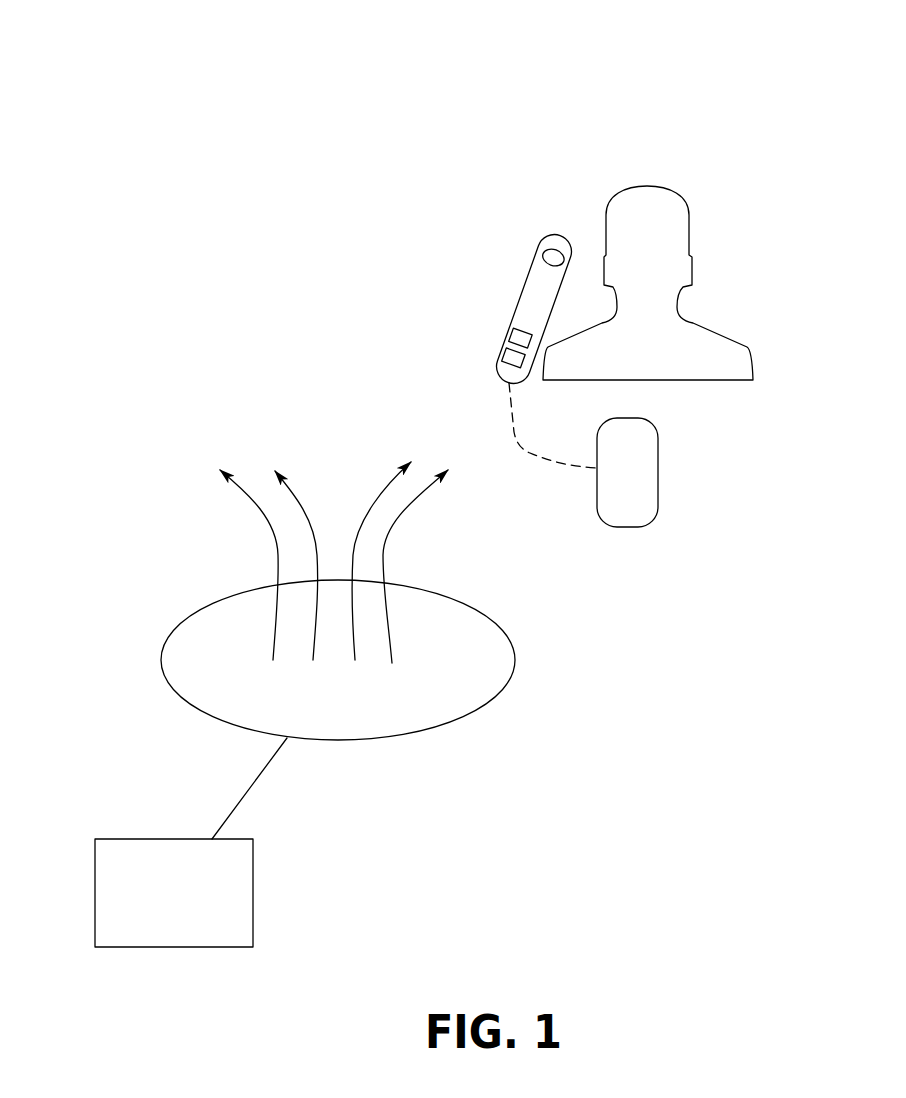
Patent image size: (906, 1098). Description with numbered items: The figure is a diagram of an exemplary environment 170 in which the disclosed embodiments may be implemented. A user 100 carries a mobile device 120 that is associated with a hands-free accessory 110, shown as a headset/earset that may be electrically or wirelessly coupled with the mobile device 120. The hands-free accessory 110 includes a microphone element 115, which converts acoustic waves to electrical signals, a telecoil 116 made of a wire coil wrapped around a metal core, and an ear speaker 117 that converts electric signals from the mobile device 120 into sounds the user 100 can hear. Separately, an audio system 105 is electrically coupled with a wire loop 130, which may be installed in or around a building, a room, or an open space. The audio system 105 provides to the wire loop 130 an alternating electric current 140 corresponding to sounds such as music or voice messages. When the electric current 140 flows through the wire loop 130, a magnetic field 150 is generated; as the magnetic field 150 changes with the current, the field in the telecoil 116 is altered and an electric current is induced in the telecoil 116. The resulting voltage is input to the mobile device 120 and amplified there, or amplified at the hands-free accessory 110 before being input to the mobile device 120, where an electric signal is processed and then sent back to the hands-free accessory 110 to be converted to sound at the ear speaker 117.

The environment 170 is at (170, 142).
The user 100 is at (687, 215).
The hands-free accessory 110 is at (556, 233).
The ear speaker 117 is at (544, 255).
The telecoil 116 is at (525, 324).
The microphone element 115 is at (498, 362).
The mobile device 120 is at (616, 457).
The wire loop 130 is at (163, 650).
The magnetic field 150 is at (270, 535).
The alternating electric current 140 is at (526, 701).
The audio system 105 is at (174, 893).